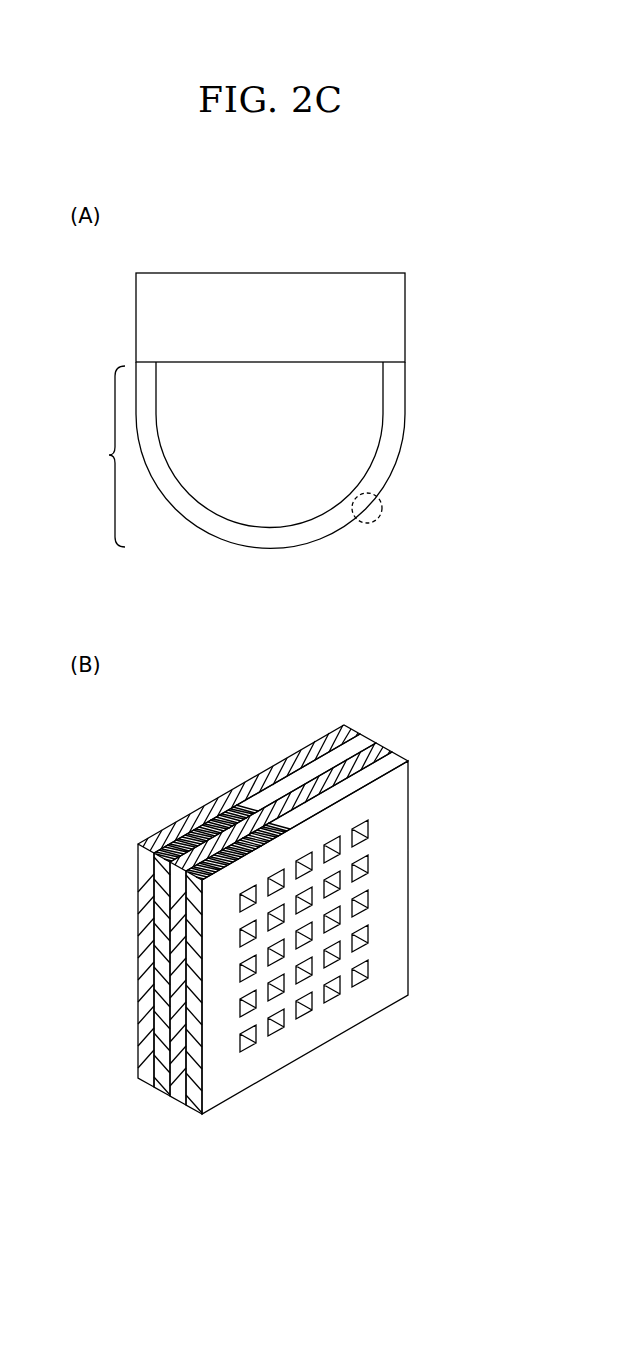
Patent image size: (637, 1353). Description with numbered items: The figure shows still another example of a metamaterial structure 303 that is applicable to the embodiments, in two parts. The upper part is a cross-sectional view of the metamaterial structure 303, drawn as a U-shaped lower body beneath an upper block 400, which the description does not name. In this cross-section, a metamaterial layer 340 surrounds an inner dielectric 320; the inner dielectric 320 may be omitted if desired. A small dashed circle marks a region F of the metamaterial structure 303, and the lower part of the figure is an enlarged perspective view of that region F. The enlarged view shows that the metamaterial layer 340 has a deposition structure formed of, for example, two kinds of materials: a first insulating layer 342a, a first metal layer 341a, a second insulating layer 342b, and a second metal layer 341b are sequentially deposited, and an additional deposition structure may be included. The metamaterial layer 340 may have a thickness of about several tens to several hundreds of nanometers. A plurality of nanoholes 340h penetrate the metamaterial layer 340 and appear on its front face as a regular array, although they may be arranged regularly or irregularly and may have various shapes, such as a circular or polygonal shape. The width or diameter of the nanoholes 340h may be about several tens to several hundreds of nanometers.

The display module / cover 400 is at (400, 344).
The metamaterial structure 303 is at (95, 456).
The inner dielectric 320 is at (258, 477).
The metamaterial layer 340 is at (317, 528).
The region F is at (380, 517).
The nanoholes 340h is at (363, 831).
The first insulating layer 342a is at (140, 1080).
The first metal layer 341a is at (157, 1090).
The second insulating layer 342b is at (178, 1095).
The second metal layer 341b is at (202, 1103).